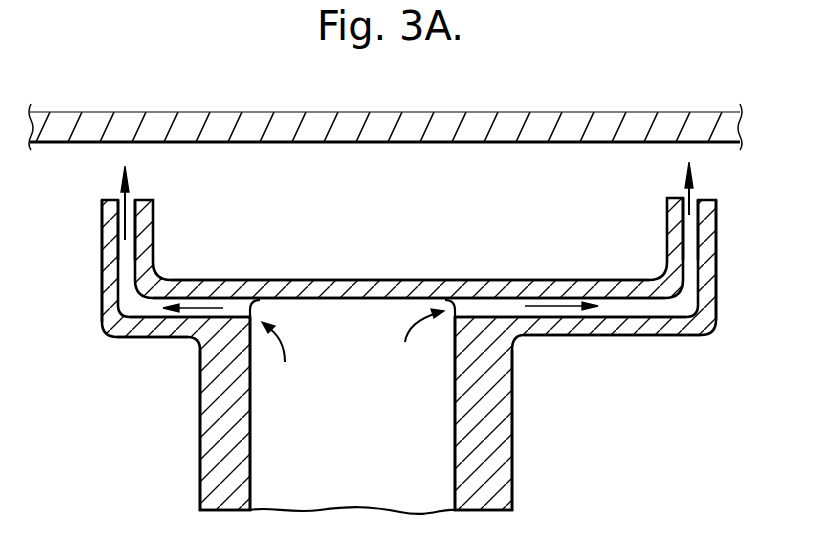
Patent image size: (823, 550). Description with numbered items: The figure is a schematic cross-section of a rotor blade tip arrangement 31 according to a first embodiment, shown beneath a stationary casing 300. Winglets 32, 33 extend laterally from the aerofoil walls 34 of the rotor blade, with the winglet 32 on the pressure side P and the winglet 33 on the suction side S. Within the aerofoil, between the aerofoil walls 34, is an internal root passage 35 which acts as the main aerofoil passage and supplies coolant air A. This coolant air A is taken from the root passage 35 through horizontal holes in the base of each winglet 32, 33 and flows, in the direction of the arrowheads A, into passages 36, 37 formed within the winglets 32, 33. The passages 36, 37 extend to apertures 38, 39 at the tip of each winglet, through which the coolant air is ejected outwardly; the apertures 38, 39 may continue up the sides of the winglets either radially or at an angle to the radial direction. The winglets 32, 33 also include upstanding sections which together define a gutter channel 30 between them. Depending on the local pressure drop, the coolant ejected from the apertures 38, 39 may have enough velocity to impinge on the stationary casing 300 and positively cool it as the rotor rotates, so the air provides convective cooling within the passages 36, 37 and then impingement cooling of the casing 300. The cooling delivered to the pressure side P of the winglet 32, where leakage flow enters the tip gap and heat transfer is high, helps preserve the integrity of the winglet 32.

The stationary casing 300 is at (247, 123).
The gutter channel 30 is at (412, 250).
The rotor tip arrangement 31 is at (517, 403).
The winglet 32 is at (640, 330).
The winglet 33 is at (160, 340).
The aerofoil walls 34 is at (222, 475).
The internal root passage 35 is at (348, 417).
The passage 36 is at (620, 300).
The passage 37 is at (241, 310).
The aperture 38 is at (690, 204).
The aperture 39 is at (102, 215).
The suction side S is at (102, 257).
The pressure side P is at (717, 262).
The coolant air A is at (283, 350).